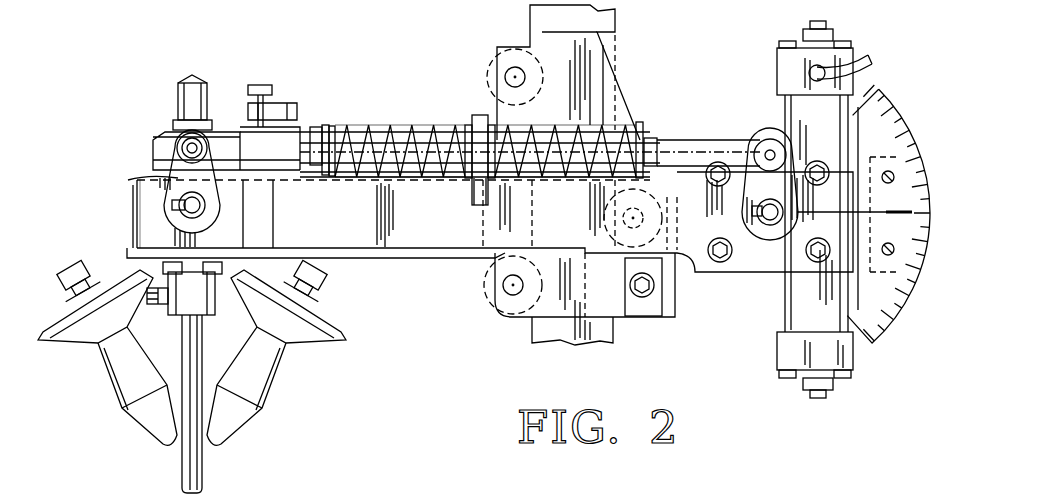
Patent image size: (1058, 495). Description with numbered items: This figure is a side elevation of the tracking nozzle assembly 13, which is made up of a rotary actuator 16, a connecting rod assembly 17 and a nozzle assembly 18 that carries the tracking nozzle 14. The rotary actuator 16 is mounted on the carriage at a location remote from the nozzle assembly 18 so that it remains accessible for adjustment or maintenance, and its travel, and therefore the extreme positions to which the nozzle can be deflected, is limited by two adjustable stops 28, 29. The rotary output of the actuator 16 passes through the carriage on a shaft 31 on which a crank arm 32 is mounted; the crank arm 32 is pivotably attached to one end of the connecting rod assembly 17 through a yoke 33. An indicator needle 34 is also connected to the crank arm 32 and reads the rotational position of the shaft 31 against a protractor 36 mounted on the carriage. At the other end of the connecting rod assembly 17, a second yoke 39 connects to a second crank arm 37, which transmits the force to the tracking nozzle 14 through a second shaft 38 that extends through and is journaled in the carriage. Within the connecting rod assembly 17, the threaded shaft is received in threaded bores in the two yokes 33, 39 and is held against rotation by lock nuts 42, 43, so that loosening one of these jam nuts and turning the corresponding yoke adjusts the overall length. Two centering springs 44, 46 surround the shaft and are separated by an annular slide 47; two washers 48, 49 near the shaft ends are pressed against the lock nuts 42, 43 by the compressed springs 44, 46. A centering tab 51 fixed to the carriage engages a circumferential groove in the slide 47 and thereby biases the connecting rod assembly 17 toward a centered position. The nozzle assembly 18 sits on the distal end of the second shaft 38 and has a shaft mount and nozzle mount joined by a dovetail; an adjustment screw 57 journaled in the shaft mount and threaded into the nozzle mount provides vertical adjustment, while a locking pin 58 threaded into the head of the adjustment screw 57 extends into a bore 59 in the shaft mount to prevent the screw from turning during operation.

The tracking nozzle assembly 13 is at (147, 112).
The tracking nozzle 14 is at (201, 480).
The rotary actuator 16 is at (795, 98).
The connecting rod assembly 17 is at (412, 108).
The nozzle assembly 18 is at (175, 320).
The adjustable stop 28 is at (835, 27).
The adjustable stop 29 is at (820, 398).
The shaft 31 is at (768, 224).
The crank arm 32 is at (778, 177).
The yoke 33 is at (715, 155).
The indicator needle 34 is at (812, 215).
The protractor 36 is at (895, 108).
The second crank arm 37 is at (128, 181).
The second shaft 38 is at (198, 214).
The second yoke 39 is at (228, 140).
The lock nut 42 is at (317, 127).
The lock nut 43 is at (654, 140).
The centering spring 44 is at (420, 178).
The centering spring 46 is at (550, 176).
The annular slide 47 is at (473, 186).
The washer 48 is at (331, 177).
The washer 49 is at (642, 138).
The centering tab 51 is at (480, 124).
The adjustment screw 57 is at (292, 104).
The locking pin 58 is at (264, 86).
The bore 59 is at (258, 138).